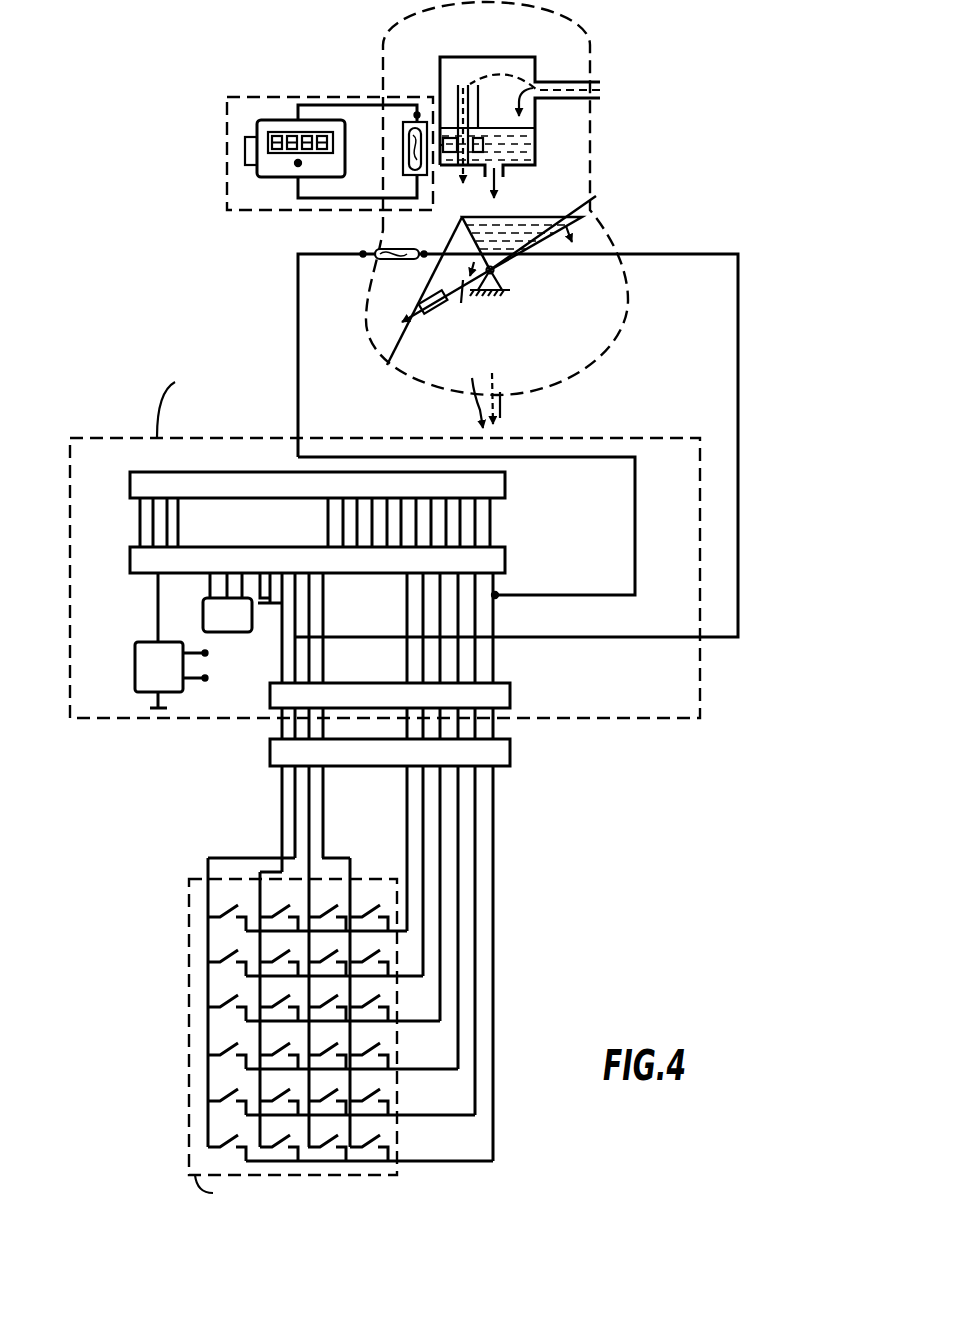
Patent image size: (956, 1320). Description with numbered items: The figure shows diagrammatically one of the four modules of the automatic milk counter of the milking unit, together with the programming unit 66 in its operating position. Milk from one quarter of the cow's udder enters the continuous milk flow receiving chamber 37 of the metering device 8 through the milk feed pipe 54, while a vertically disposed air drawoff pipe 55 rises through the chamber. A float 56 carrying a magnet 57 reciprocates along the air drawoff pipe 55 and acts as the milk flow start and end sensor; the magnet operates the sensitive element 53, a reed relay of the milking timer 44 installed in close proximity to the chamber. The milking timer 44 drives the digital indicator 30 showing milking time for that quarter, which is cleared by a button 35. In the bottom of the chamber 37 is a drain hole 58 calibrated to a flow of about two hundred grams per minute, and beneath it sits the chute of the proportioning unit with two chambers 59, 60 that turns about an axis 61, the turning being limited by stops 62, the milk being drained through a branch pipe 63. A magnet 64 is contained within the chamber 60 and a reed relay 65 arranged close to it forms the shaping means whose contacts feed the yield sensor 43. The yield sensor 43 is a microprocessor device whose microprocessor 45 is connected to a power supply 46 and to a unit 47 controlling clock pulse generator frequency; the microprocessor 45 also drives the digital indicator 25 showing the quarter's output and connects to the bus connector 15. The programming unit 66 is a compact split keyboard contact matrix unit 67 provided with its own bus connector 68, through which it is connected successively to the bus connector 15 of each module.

The metering device 8 is at (370, 338).
The bus connector 15 is at (512, 696).
The digital indicator 25 is at (507, 488).
The digital indicator 30 is at (268, 136).
The button 35 is at (298, 163).
The continuous milk flow receiving chamber 37 is at (515, 65).
The yield sensor 43 is at (107, 433).
The milking timer 44 is at (240, 92).
The microprocessor 45 is at (507, 562).
The power supply 46 is at (135, 666).
The unit designed to control clock pulse generator frequency 47 is at (208, 612).
The sensitive element 53 is at (400, 128).
The milk feed pipe 54 is at (598, 83).
The air drawoff pipe 55 is at (459, 84).
The float 56 is at (522, 44).
The magnet 57 is at (445, 168).
The drain hole 58 is at (505, 178).
The chamber of the proportioning unit 59 is at (552, 228).
The chamber of the proportioning unit 60 is at (462, 300).
The axis 61 is at (496, 270).
The stops 62 is at (543, 317).
The branch pipe 63 is at (502, 405).
The magnet 64 is at (484, 302).
The reed relay 65 is at (374, 262).
The programming unit 66 is at (307, 1034).
The keyboard contact matrix unit 67 is at (228, 1000).
The bus connector 68 is at (512, 752).